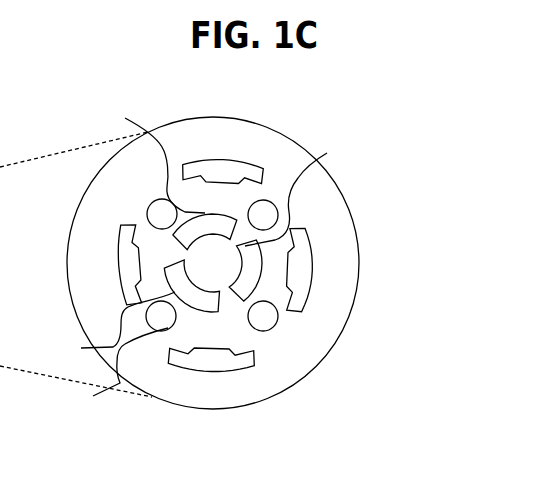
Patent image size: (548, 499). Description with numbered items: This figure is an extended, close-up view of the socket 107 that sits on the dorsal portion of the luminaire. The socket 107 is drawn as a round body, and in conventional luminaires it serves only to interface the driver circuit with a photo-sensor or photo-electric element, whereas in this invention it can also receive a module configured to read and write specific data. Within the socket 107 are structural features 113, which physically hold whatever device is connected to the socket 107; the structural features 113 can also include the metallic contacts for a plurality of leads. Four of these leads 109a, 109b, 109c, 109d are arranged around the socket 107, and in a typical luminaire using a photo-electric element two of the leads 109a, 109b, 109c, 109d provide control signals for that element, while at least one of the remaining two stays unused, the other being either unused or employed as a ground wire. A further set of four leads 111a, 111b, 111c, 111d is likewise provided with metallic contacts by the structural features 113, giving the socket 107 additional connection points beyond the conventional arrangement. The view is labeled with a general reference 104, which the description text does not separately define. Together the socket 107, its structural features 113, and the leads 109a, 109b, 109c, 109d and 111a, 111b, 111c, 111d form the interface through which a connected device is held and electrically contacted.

The rotor plate 104 is at (231, 97).
The socket 107 is at (254, 406).
The lead 109a is at (121, 227).
The lead 109b is at (176, 350).
The lead 109c is at (302, 312).
The lead 109d is at (232, 144).
The lead 111a is at (141, 158).
The lead 111b is at (309, 193).
The lead 111c is at (106, 326).
The lead 111d is at (113, 375).
The structural features 113 is at (262, 152).